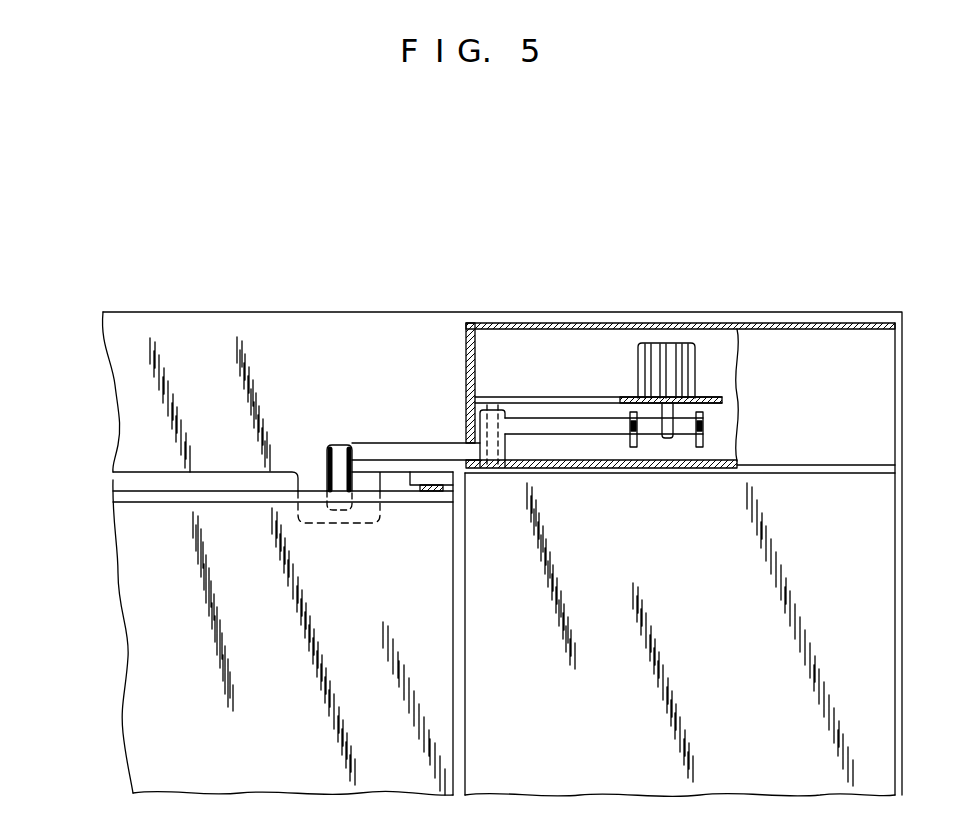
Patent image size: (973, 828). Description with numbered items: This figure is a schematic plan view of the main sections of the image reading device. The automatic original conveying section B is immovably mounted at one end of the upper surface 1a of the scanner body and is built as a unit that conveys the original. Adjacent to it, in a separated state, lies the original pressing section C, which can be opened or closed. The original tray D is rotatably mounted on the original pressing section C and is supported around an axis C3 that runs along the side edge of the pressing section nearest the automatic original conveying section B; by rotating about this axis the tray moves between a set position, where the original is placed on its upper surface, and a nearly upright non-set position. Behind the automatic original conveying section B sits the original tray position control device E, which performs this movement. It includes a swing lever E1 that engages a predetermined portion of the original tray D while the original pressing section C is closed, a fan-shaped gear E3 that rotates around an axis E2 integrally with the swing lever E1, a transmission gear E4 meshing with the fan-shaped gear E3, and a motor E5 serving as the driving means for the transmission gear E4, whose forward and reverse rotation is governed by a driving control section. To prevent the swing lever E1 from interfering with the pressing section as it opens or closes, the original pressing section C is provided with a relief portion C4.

The upper surface 1a is at (187, 342).
The automatic original conveying section B is at (857, 664).
The original pressing section C is at (193, 483).
The axis C3 is at (430, 493).
The relief portion C4 is at (313, 482).
The original tray D is at (143, 588).
The original tray position control device E is at (580, 358).
The swing lever E1 is at (380, 450).
The axis E2 is at (488, 470).
The fan-shaped gear E3 is at (583, 428).
The transmission gear E4 is at (683, 428).
The motor E5 is at (667, 358).